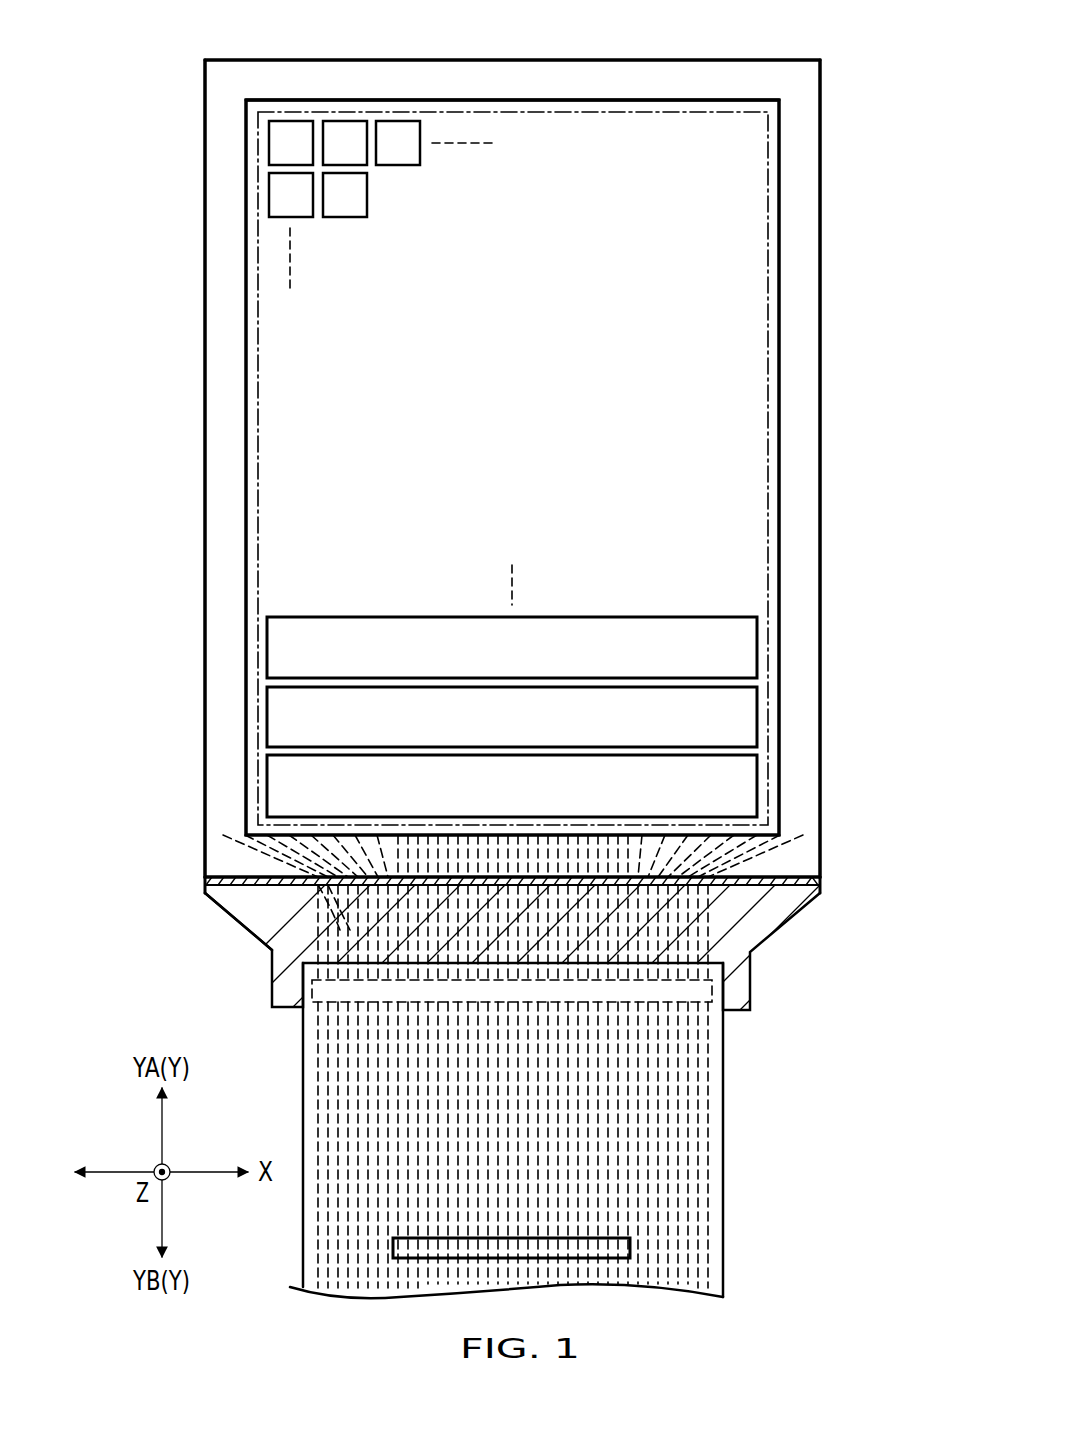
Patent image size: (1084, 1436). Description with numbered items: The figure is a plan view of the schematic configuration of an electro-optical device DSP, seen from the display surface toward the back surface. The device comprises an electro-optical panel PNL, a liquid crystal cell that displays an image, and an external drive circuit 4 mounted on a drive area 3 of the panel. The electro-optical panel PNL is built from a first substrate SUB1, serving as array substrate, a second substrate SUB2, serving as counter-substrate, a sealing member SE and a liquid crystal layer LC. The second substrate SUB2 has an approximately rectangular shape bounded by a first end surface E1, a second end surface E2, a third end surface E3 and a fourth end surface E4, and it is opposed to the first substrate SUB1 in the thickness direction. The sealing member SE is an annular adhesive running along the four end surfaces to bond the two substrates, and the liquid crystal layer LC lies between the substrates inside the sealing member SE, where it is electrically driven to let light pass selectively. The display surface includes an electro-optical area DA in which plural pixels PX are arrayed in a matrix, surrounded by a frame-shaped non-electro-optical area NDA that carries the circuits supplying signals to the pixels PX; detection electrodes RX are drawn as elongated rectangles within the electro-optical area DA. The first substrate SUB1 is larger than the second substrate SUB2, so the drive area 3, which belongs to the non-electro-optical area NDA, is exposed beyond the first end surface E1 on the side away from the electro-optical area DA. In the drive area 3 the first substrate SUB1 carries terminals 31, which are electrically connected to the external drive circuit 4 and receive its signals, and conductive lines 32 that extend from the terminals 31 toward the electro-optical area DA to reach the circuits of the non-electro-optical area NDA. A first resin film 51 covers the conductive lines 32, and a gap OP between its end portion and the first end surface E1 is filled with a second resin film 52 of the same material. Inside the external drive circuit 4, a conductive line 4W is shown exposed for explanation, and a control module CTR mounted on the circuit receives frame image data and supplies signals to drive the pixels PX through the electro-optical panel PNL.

The electro-optical device DSP is at (183, 256).
The electro-optical panel PNL is at (567, 446).
The second substrate SUB2 is at (825, 688).
The first substrate SUB1 is at (731, 1015).
The first end surface E1 is at (775, 887).
The second end surface E2 is at (205, 770).
The third end surface E3 is at (352, 60).
The fourth end surface E4 is at (820, 175).
The sealing member SE is at (682, 60).
The liquid crystal layer LC is at (638, 107).
The non-electro-optical area NDA is at (530, 90).
The electro-optical area DA is at (530, 123).
The pixel PX is at (343, 128).
The detection electrode RX is at (323, 705).
The gap OP is at (805, 875).
The second resin film 52 is at (208, 881).
The first resin film 51 is at (227, 912).
The drive area 3 is at (555, 986).
The conductive line 32 is at (330, 935).
The terminal 31 is at (313, 990).
The external drive circuit 4 is at (729, 1189).
The conductive line 4W is at (668, 1272).
The control module CTR is at (400, 1247).